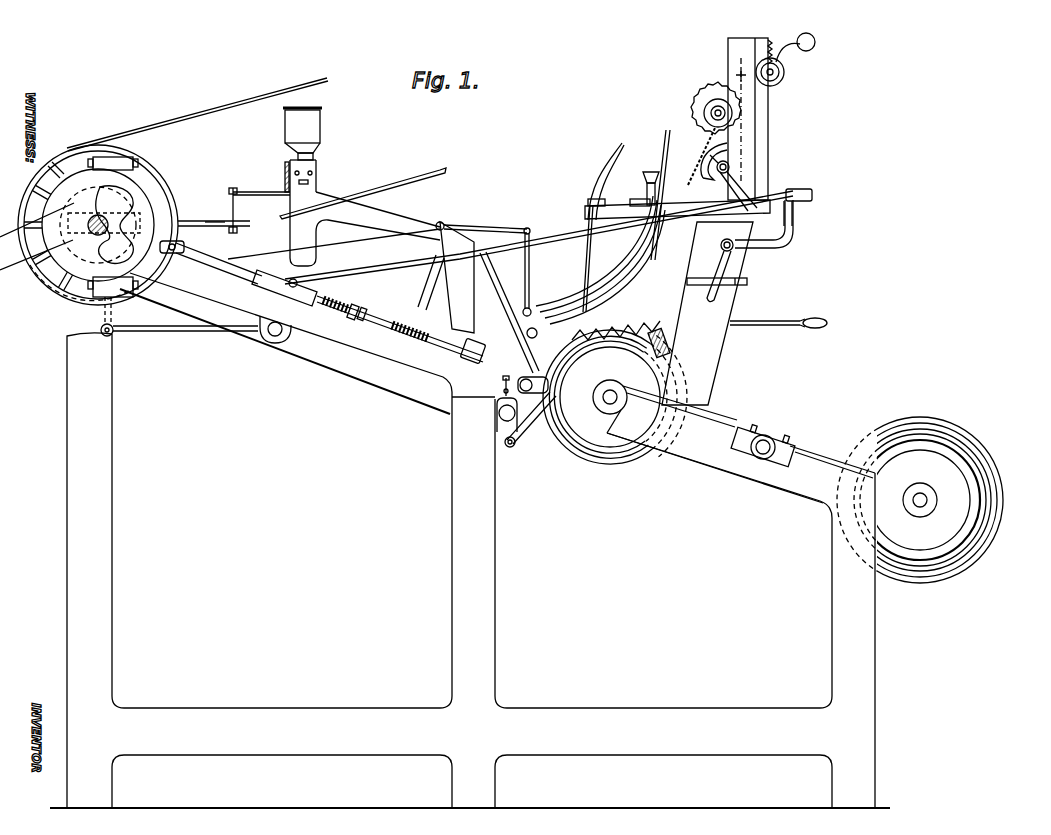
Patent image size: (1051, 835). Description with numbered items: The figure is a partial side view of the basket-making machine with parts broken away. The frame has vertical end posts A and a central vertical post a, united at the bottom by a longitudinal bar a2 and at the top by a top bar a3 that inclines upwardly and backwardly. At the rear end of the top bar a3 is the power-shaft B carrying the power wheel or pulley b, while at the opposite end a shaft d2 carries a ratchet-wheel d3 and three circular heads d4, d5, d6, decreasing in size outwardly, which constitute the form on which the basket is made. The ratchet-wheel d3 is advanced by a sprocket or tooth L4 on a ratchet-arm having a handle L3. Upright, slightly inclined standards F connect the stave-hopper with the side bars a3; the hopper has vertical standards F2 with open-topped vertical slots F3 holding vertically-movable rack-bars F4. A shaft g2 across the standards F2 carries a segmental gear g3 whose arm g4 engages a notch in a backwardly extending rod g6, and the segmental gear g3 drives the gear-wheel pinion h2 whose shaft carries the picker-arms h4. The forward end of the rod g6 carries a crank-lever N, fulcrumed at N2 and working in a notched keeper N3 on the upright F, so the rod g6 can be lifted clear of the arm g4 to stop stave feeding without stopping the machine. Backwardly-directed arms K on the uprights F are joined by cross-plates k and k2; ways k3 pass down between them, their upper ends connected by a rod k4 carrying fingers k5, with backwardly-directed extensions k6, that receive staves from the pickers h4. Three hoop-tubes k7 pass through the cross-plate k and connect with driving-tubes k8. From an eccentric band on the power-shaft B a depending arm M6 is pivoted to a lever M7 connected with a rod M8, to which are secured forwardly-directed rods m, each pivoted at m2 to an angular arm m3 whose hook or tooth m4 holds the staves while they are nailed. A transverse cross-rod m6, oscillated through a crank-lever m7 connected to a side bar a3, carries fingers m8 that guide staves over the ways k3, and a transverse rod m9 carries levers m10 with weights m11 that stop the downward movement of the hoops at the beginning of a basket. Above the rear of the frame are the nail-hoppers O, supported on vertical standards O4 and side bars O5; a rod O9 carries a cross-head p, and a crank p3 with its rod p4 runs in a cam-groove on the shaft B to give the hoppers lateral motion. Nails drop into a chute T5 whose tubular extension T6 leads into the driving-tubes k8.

The vertical end posts A is at (110, 596).
The central vertical post a is at (473, 502).
The longitudinal bar a2 is at (472, 763).
The top bar a3 is at (741, 444).
The power wheel or pulley b is at (55, 162).
The power-shaft B is at (93, 233).
The cross-head p is at (287, 211).
The crank p3 is at (238, 207).
The rod p4 is at (212, 221).
The hoppers O is at (302, 134).
The vertical standards O4 is at (309, 247).
The side bars O5 is at (363, 204).
The rod O9 is at (261, 191).
The chute T5 is at (446, 277).
The tubular extension T6 is at (466, 342).
The forwardly-directed rods m is at (383, 388).
The pivot m2 is at (509, 450).
The upwardly-directed angular arm m3 is at (621, 142).
The hook or tooth m4 is at (589, 349).
The cross-rod m6 is at (527, 310).
The crank-lever m7 is at (671, 177).
The fingers m8 is at (586, 272).
The transverse rod m9 is at (496, 403).
The levers m10 is at (596, 400).
The weights m11 is at (505, 414).
The depending arm M6 is at (116, 327).
The lever M7 is at (200, 333).
The rod M8 is at (272, 337).
The shaft g2 is at (730, 168).
The segmental gear g3 is at (730, 144).
The arm g4 is at (796, 209).
The rod g6 is at (400, 264).
The crank-lever N is at (782, 236).
The fulcrum N2 is at (735, 252).
The keeper N3 is at (741, 285).
The handle L3 is at (820, 318).
The sprocket or tooth L4 is at (620, 324).
The standards F is at (706, 338).
The vertical standards F2 is at (733, 159).
The vertical slots F3 is at (746, 123).
The rack-bars F4 is at (728, 49).
The gear-wheel pinion h2 is at (709, 98).
The picker-arms h4 is at (740, 112).
The cross-plate k is at (643, 205).
The cross-plate k2 is at (593, 204).
The ways k3 is at (664, 252).
The rod k4 is at (667, 132).
The fingers k5 is at (690, 212).
The backwardly-directed extensions k6 is at (688, 190).
The hoop-tubes k7 is at (649, 180).
The driving-tubes k8 is at (503, 383).
The backwardly-directed arms K is at (600, 182).
The shaft d2 is at (1024, 498).
The ratchet-wheel d3 is at (700, 324).
The circular head d4 is at (622, 469).
The circular head d5 is at (604, 463).
The circular head d6 is at (583, 443).